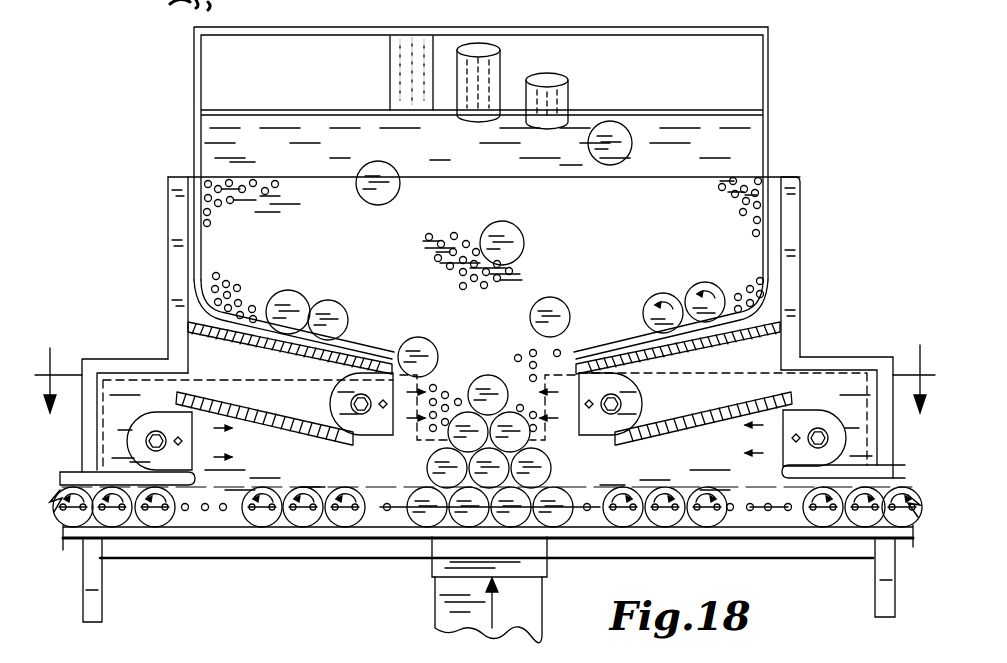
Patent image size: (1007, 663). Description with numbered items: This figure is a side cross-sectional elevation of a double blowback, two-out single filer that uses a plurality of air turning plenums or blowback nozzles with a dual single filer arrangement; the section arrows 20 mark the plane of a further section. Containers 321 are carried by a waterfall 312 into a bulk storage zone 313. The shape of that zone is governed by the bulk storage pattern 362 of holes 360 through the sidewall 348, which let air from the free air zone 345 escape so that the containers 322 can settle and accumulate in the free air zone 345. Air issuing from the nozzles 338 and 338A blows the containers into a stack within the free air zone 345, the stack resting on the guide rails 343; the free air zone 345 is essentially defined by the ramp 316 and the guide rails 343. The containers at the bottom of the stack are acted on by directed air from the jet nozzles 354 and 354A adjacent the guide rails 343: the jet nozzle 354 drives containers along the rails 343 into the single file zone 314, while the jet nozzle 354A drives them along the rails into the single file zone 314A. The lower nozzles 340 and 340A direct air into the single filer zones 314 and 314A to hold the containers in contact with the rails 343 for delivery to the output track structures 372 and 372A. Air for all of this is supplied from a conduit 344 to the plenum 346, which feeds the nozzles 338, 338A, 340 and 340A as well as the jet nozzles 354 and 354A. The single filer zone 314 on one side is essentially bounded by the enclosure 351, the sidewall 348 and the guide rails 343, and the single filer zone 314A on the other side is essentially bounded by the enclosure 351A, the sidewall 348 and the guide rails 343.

The section line 20- 20 is at (488, 360).
The waterfall 312 is at (744, 80).
The bulk storage zone 313 is at (497, 320).
The single file zone 314 is at (297, 467).
The single file zone 314A is at (693, 470).
The ramp 316 is at (241, 340).
The containers 321 is at (480, 47).
The containers 322 is at (378, 175).
The nozzle 338 is at (373, 425).
The nozzle 338A is at (599, 383).
The lower nozzle 340 is at (163, 422).
The lower nozzle 340A is at (828, 418).
The guide rails 343 is at (345, 532).
The conduit 344 is at (445, 600).
The free air zone 345 is at (507, 373).
The plenum 346 is at (212, 372).
The sidewall 348 is at (188, 207).
The enclosure 351 is at (272, 422).
The enclosure 351A is at (712, 412).
The jet nozzle 354 is at (223, 512).
The jet nozzle 354A is at (768, 512).
The holes 360 is at (264, 190).
The bulk storage pattern 362 is at (769, 240).
The output track structure 372 is at (70, 470).
The output track structure 372A is at (790, 468).